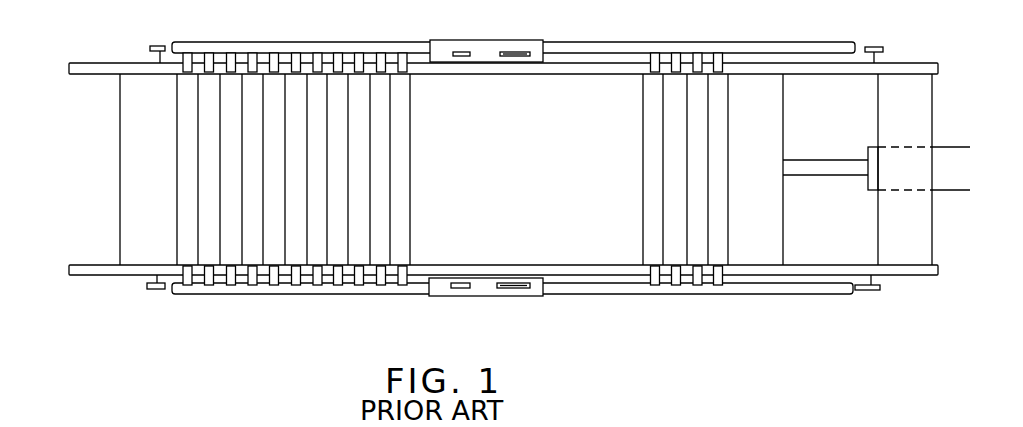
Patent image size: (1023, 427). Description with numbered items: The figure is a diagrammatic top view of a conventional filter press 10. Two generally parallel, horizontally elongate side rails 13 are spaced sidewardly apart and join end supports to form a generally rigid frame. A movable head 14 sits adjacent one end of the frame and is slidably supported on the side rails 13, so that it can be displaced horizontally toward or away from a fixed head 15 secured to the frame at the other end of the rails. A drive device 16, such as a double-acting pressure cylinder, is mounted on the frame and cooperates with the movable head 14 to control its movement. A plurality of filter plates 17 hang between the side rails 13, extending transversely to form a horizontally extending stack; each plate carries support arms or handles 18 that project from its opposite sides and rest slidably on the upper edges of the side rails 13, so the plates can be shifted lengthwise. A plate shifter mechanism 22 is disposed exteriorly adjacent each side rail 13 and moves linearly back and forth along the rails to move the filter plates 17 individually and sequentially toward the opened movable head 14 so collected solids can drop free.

The filter press 10 is at (217, 316).
The side rails 13 is at (597, 70).
The movable head 14 is at (748, 250).
The fixed head 15 is at (126, 161).
The drive device 16 is at (842, 162).
The filter plates 17 is at (378, 158).
The support arms or handles 18 is at (359, 54).
The plate shifter mechanism 22 is at (492, 40).